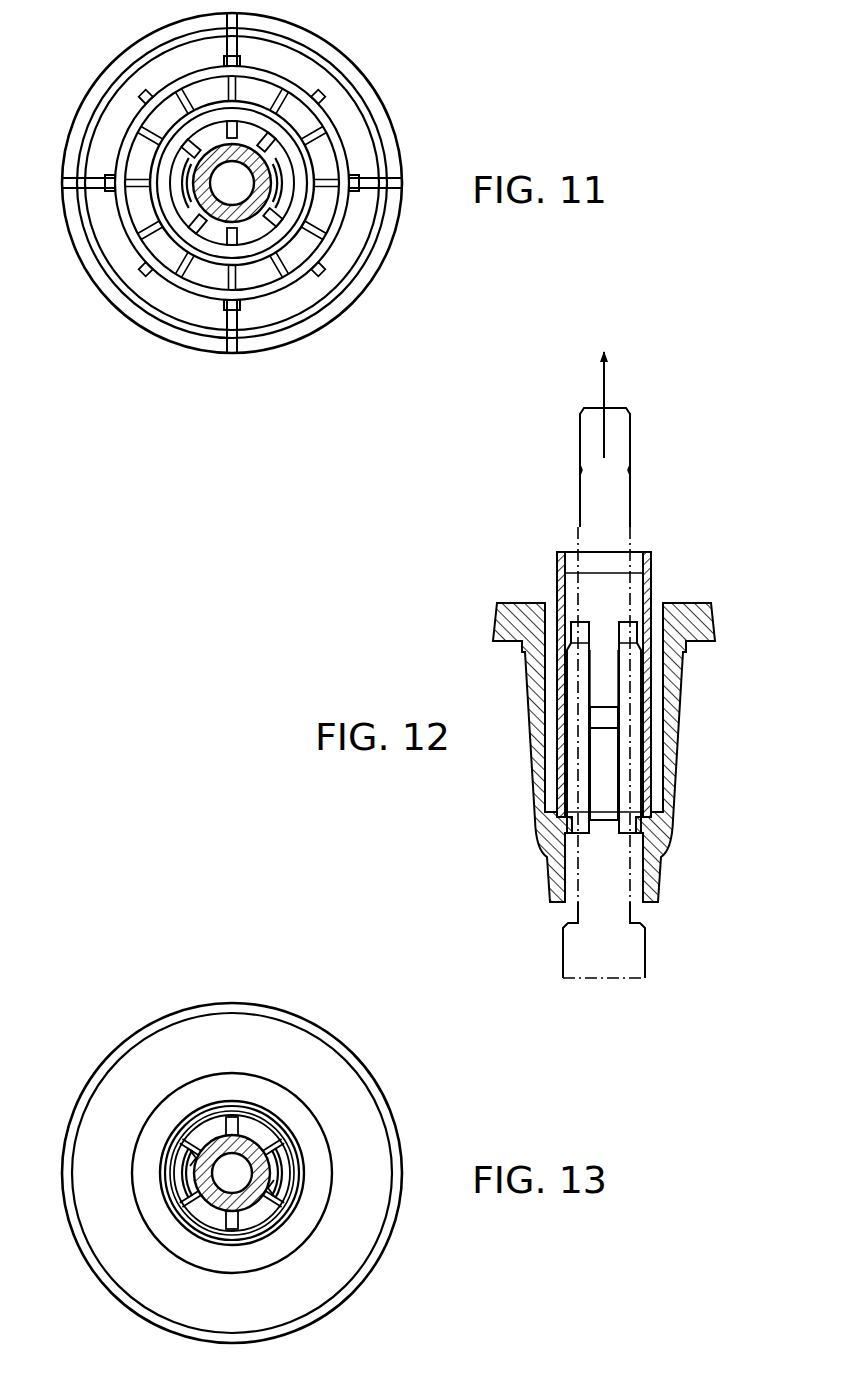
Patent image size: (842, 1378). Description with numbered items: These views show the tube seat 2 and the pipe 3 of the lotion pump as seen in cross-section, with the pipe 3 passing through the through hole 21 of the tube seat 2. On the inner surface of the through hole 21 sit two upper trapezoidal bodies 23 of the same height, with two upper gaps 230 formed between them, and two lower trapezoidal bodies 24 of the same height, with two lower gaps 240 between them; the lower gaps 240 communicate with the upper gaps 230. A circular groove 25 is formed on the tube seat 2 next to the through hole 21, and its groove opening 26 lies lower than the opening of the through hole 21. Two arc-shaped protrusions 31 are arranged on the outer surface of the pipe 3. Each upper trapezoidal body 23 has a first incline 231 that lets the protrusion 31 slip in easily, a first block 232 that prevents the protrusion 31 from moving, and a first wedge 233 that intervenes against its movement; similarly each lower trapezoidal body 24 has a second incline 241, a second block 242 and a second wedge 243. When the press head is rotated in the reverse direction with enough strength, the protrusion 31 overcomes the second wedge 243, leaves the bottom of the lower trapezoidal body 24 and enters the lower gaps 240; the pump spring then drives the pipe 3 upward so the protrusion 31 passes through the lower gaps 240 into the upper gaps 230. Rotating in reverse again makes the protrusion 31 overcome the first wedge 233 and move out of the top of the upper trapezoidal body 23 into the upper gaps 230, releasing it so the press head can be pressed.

In FIG. 11, the tube seat 2 is at (424, 134).
In FIG. 12, the tube seat 2 is at (690, 718).
In FIG. 13, the tube seat 2 is at (404, 1110).
In FIG. 11, the pipe 3 is at (208, 152).
In FIG. 12, the pipe 3 is at (632, 503).
In FIG. 13, the pipe 3 is at (240, 1208).
In FIG. 12, the through hole 21 is at (571, 596).
In FIG. 12, the upper trapezoidal body 23 is at (634, 640).
In FIG. 13, the upper trapezoidal body 23 is at (234, 1118).
In FIG. 11, the lower trapezoidal body 24 is at (217, 238).
In FIG. 12, the lower trapezoidal body 24 is at (563, 825).
In FIG. 12, the circular groove 25 is at (664, 740).
In FIG. 13, the circular groove 25 is at (225, 1088).
In FIG. 13, the groove opening 26 is at (193, 1078).
In FIG. 11, the arc-shaped protrusion 31 is at (283, 192).
In FIG. 12, the arc-shaped protrusion 31 is at (603, 710).
In FIG. 13, the arc-shaped protrusion 31 is at (180, 1183).
In FIG. 12, the upper gap 230 is at (607, 652).
In FIG. 13, the upper gap 230 is at (180, 1210).
In FIG. 13, the first incline 231 is at (183, 1115).
In FIG. 13, the first block 232 is at (182, 1227).
In FIG. 13, the first wedge 233 is at (177, 1128).
In FIG. 11, the lower gap 240 is at (152, 168).
In FIG. 12, the lower gap 240 is at (608, 818).
In FIG. 11, the second incline 241 is at (277, 148).
In FIG. 11, the second block 242 is at (270, 227).
In FIG. 11, the second wedge 243 is at (195, 230).